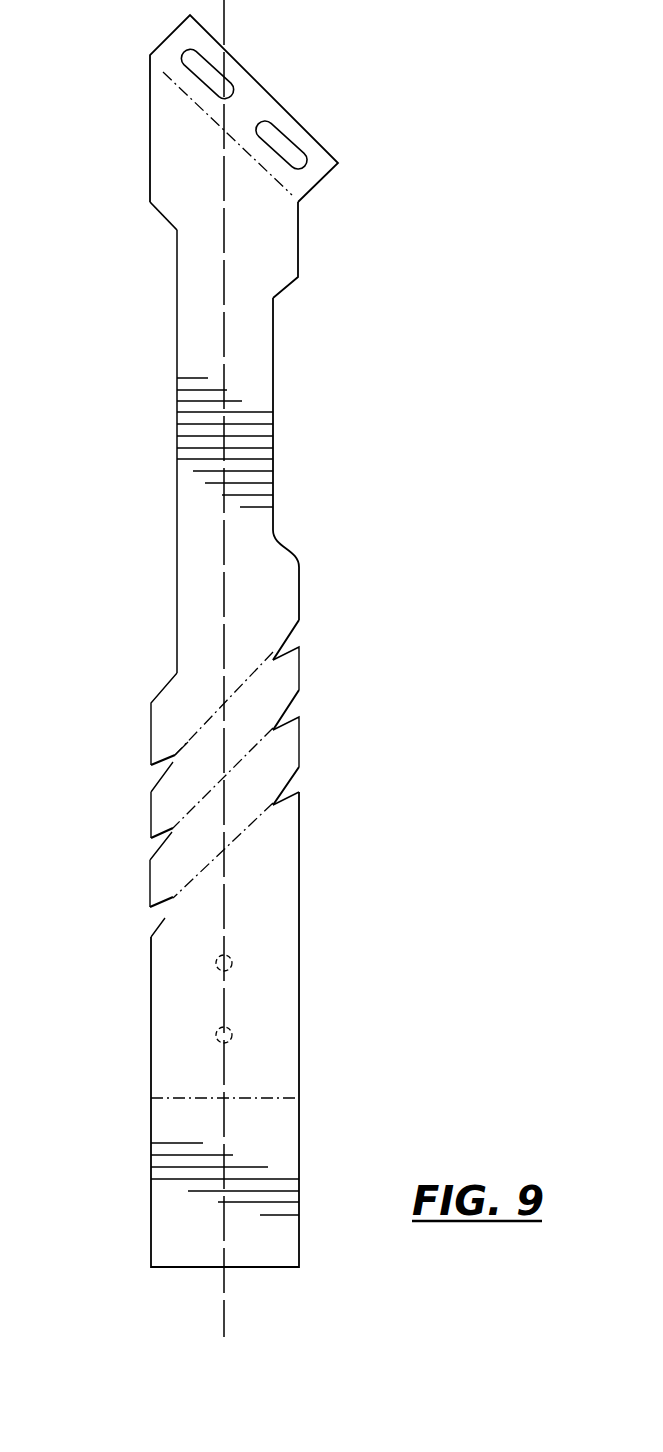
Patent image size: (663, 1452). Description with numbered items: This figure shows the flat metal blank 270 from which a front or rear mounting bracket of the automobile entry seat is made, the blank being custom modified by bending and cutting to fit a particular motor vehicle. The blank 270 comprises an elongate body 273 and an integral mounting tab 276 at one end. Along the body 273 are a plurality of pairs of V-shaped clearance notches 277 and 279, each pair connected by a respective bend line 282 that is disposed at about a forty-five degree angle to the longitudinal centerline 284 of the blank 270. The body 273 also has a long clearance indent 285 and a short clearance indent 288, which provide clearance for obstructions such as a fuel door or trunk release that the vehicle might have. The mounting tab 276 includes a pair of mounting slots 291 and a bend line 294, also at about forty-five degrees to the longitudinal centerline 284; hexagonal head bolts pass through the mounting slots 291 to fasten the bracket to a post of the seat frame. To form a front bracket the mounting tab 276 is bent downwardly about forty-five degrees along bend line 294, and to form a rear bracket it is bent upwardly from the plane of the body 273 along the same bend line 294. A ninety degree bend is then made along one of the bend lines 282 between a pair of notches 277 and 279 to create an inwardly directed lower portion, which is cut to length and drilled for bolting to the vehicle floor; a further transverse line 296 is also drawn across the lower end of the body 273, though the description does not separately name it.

The flat metal blank 270 is at (324, 383).
The elongate body 273 is at (316, 942).
The mounting tab 276 is at (334, 186).
The V-shaped clearance notch 277 is at (299, 773).
The V-shaped clearance notch 279 is at (157, 783).
The bend line 282 is at (217, 783).
The longitudinal centerline 284 is at (224, 355).
The long clearance indent 285 is at (177, 522).
The short clearance indent 288 is at (273, 475).
The mounting slot 291 is at (230, 83).
The bend line 294 is at (197, 103).
The lower fold line 296 is at (199, 1097).